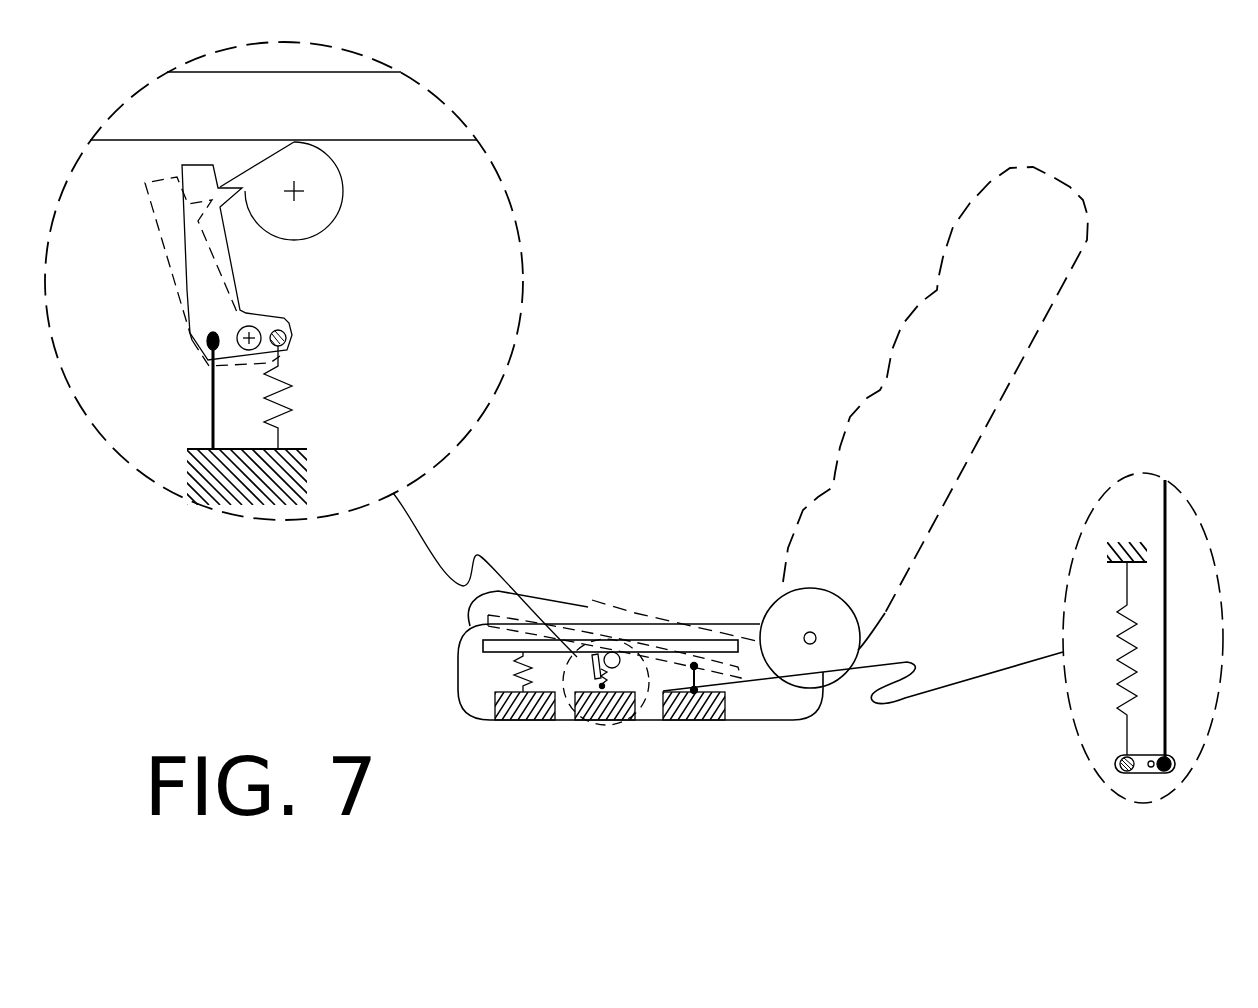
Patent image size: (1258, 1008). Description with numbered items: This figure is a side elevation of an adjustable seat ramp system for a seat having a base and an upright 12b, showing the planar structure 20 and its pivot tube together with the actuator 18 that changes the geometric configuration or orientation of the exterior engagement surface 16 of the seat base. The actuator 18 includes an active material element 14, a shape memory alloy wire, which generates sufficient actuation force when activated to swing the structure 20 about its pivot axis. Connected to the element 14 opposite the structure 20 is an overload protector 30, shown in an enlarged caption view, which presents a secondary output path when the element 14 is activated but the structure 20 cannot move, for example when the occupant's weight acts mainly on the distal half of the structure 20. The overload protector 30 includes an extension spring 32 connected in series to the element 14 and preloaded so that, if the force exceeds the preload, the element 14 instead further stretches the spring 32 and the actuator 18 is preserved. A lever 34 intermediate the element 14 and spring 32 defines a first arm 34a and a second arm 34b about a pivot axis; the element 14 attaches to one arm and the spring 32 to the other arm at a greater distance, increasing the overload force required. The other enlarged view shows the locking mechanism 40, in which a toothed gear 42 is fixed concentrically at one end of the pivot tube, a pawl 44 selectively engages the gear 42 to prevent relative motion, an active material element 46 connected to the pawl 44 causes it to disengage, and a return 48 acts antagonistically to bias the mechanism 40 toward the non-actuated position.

The upright 12b is at (1032, 316).
The active material element 14 is at (1165, 563).
The exterior engagement surface 16 is at (588, 607).
The actuator 18 is at (641, 727).
The structure 20 is at (403, 131).
The overload protector 30 is at (1162, 460).
The extension spring 32 is at (1125, 706).
The lever 34 is at (1198, 737).
The first arm 34a is at (1158, 775).
The second arm 34b is at (1130, 777).
The locking mechanism 40 is at (548, 167).
The toothed gear 42 is at (383, 217).
The pawl 44 is at (190, 292).
The active material element 46 is at (213, 371).
The return 48 is at (285, 395).